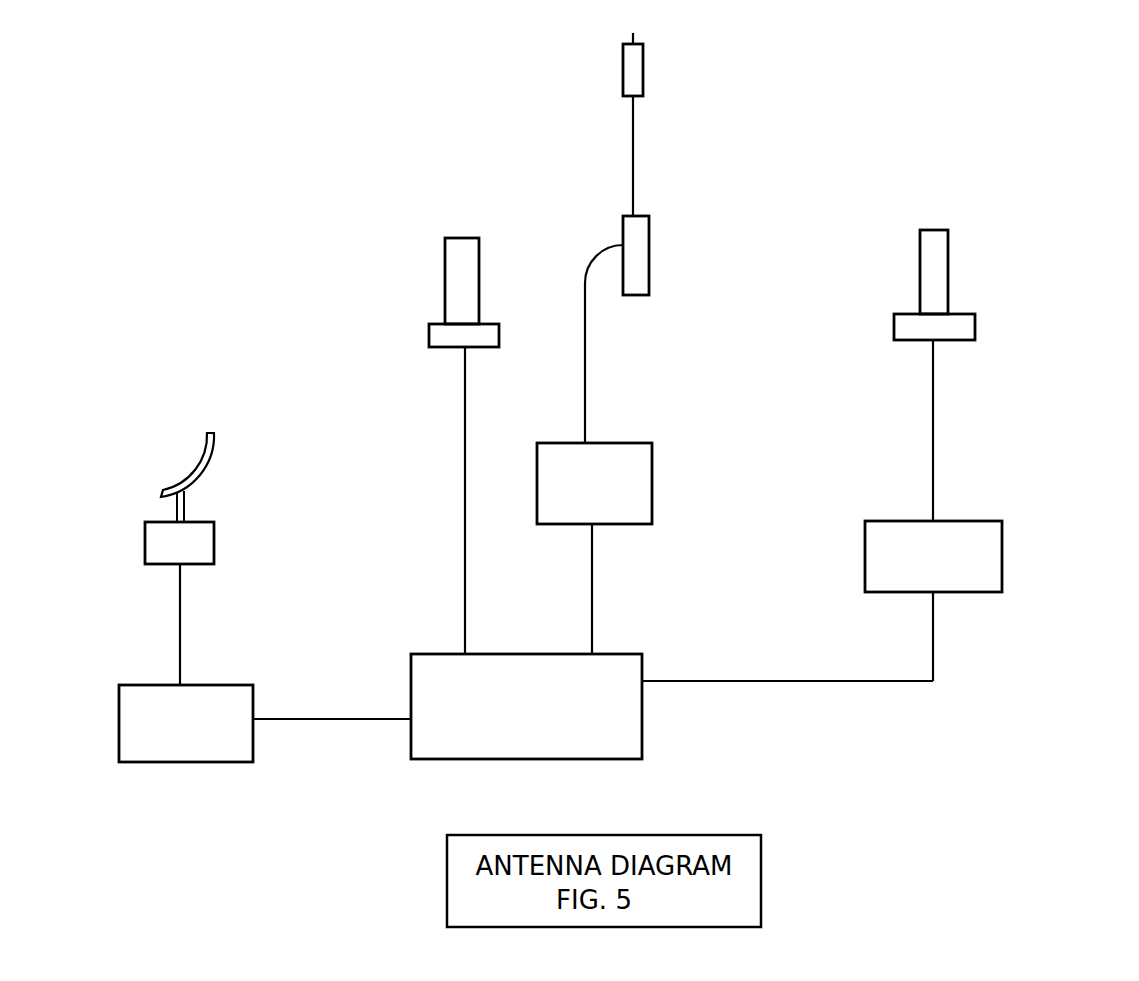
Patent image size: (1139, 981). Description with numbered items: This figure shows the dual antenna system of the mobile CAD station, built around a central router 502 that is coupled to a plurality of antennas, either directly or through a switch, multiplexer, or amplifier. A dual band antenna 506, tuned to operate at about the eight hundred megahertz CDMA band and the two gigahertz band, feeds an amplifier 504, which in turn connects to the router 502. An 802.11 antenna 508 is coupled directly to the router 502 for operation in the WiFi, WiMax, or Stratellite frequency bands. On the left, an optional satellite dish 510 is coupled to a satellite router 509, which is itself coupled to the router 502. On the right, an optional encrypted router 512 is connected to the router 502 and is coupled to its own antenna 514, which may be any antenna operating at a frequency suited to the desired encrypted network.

The router 502 is at (593, 706).
The amplifier 504 is at (619, 548).
The dual band antenna 506 is at (643, 238).
The 802.11 antenna 508 is at (476, 446).
The satellite router 509 is at (165, 723).
The satellite dish 510 is at (146, 559).
The encrypted router 512 is at (995, 601).
The antenna 514 is at (944, 375).